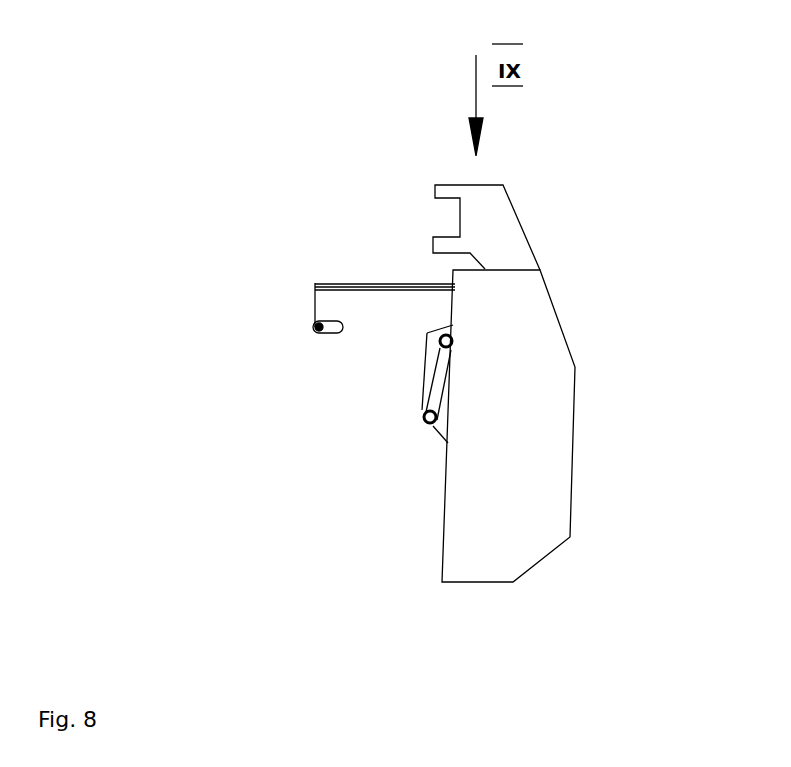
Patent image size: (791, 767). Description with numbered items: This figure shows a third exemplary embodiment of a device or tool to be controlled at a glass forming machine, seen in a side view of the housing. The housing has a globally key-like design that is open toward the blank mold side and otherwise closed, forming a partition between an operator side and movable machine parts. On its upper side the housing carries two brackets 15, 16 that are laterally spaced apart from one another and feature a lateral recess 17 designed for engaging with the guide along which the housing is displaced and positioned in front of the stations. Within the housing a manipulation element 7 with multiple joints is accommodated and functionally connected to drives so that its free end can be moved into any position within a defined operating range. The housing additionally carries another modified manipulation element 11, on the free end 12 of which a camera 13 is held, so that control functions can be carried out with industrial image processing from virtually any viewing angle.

The manipulation element 7 is at (430, 382).
The modified manipulation element 11 is at (369, 282).
The free end 12 is at (307, 280).
The camera 13 is at (330, 338).
The bracket 15 is at (559, 382).
The bracket 16 is at (503, 252).
The lateral recess 17 is at (442, 212).